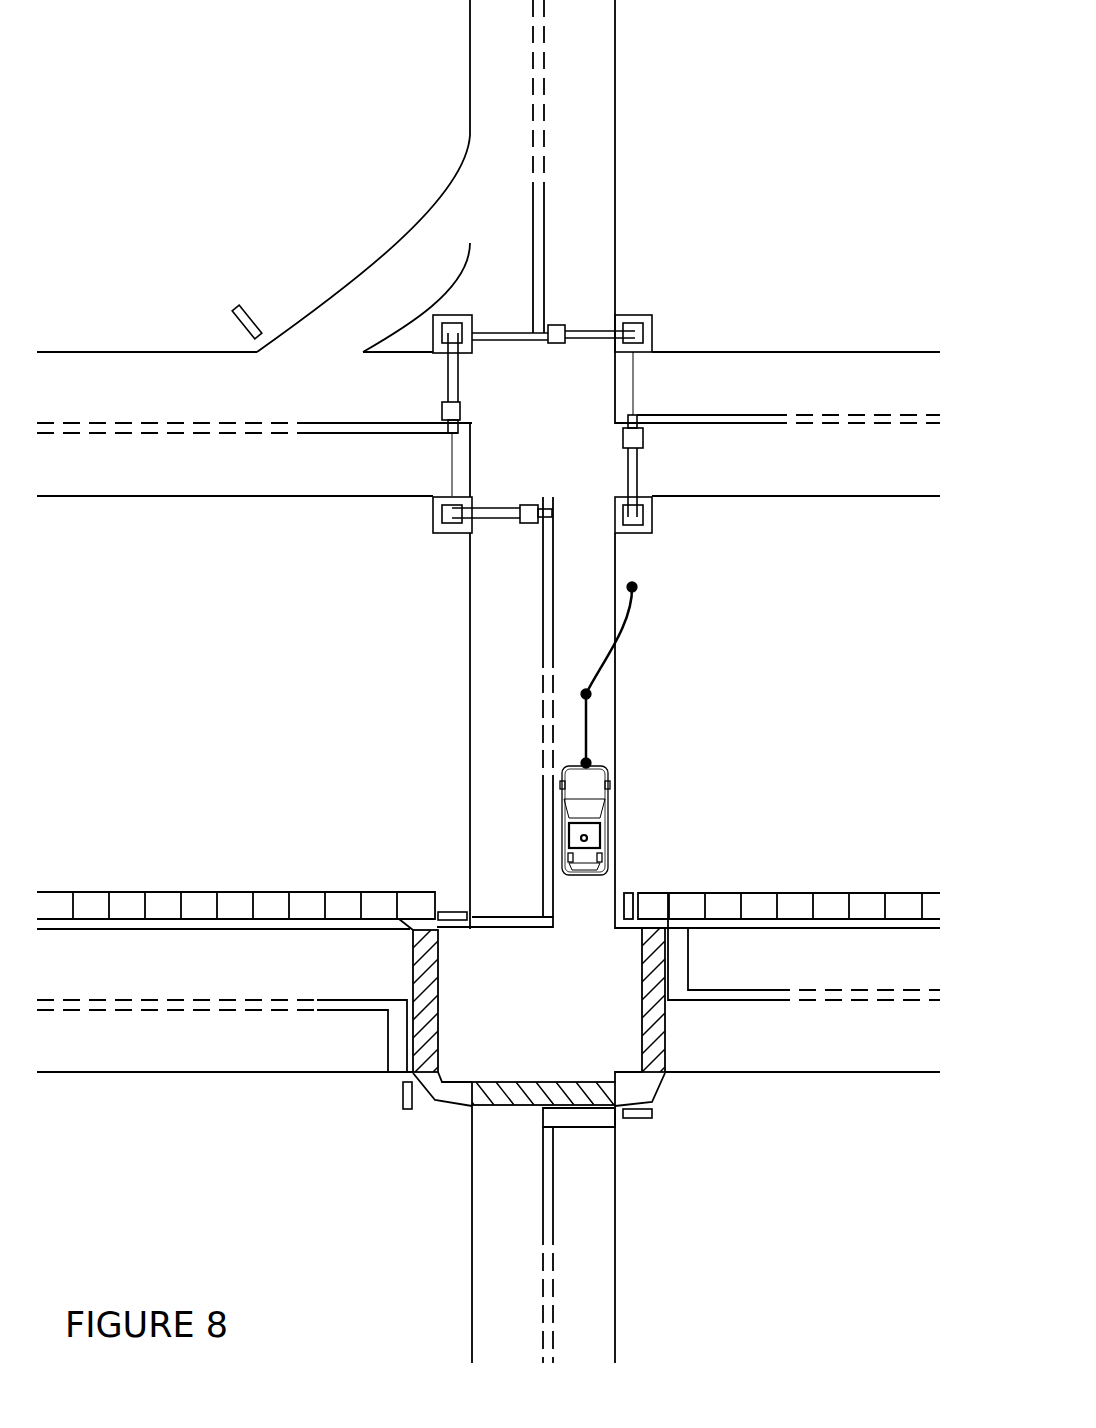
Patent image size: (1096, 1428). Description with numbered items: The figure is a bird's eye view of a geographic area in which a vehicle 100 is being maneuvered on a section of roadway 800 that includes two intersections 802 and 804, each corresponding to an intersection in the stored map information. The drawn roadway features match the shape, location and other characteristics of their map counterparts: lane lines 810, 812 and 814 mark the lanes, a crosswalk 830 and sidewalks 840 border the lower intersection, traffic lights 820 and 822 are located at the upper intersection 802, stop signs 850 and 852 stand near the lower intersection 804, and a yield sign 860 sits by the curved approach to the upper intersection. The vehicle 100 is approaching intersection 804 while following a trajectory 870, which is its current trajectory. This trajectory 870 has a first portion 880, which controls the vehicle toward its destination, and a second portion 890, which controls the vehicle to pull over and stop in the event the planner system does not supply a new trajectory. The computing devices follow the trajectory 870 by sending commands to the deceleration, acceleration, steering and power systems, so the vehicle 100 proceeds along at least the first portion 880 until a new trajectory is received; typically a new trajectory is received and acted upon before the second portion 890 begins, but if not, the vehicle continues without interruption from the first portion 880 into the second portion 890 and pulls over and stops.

The vehicle 100 is at (608, 826).
The section of roadway 800 is at (166, 1282).
The intersection 802 is at (542, 424).
The intersection 804 is at (539, 1016).
The lane line 810 is at (123, 1010).
The lane line 812 is at (193, 1073).
The lane line 814 is at (545, 100).
The traffic light 820 is at (558, 323).
The traffic light 822 is at (442, 405).
The crosswalk 830 is at (463, 1092).
The sidewalk 840 is at (717, 892).
The stop sign 850 is at (440, 912).
The stop sign 852 is at (652, 1118).
The yield sign 860 is at (230, 320).
The trajectory 870 is at (723, 577).
The first portion 880 is at (587, 732).
The second portion 890 is at (617, 647).